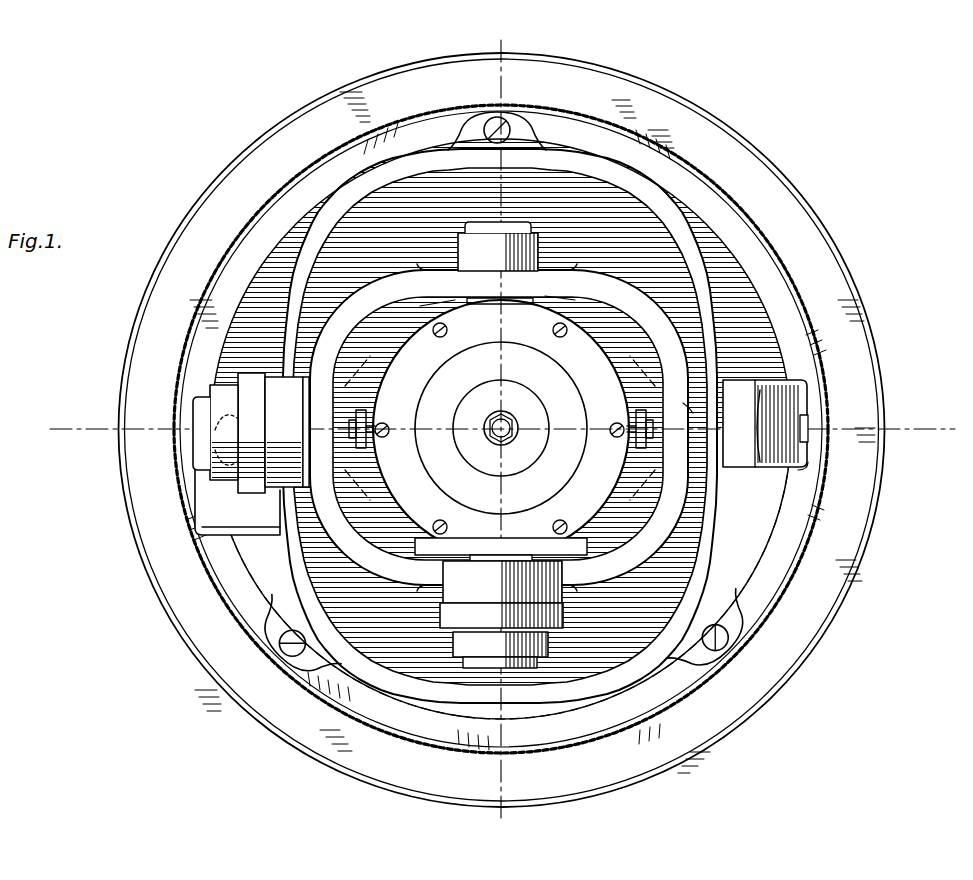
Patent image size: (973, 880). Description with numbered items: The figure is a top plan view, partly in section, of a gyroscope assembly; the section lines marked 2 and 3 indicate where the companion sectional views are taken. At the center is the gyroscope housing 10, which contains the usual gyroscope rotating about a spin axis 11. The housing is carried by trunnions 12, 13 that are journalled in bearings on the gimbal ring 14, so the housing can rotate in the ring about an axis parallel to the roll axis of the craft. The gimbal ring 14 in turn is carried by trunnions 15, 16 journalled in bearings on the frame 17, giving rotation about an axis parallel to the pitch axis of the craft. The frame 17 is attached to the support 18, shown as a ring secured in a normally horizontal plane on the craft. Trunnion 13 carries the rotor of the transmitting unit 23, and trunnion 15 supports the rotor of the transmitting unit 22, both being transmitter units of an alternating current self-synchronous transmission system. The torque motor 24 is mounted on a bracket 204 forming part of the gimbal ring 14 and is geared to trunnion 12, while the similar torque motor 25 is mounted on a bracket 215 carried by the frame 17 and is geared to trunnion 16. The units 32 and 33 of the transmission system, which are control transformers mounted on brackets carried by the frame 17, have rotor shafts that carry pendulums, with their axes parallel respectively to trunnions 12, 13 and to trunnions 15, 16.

The section line 2- 2 is at (478, 36).
The section line 3- 3 is at (68, 401).
The gyroscope housing 10 is at (501, 427).
The spin axis 11 is at (518, 426).
The trunnion 12 is at (508, 555).
The trunnion 13 is at (452, 302).
The gimbal ring 14 is at (398, 278).
The trunnion 15 is at (693, 413).
The trunnion 16 is at (305, 418).
The frame 17 is at (652, 222).
The support 18 is at (800, 533).
The transmitting unit 22 is at (765, 423).
The transmitting unit 23 is at (498, 246).
The torque motor 24 is at (500, 650).
The torque motor 25 is at (218, 385).
The unit of the transmission system 32 is at (237, 502).
The unit of the transmission system 33 is at (790, 468).
The bracket 204 is at (501, 594).
The bracket 215 is at (287, 432).